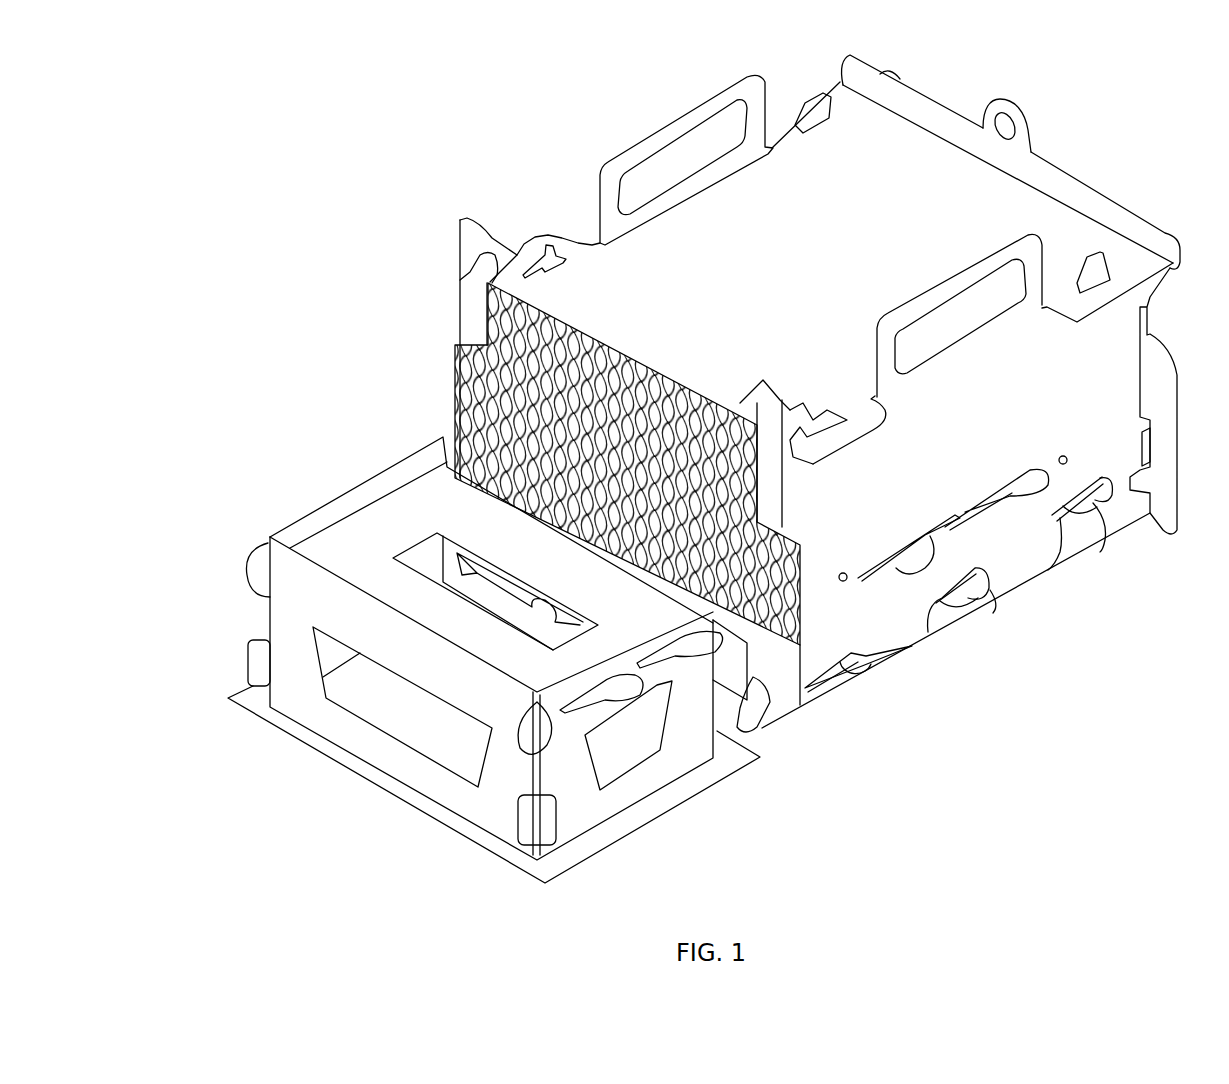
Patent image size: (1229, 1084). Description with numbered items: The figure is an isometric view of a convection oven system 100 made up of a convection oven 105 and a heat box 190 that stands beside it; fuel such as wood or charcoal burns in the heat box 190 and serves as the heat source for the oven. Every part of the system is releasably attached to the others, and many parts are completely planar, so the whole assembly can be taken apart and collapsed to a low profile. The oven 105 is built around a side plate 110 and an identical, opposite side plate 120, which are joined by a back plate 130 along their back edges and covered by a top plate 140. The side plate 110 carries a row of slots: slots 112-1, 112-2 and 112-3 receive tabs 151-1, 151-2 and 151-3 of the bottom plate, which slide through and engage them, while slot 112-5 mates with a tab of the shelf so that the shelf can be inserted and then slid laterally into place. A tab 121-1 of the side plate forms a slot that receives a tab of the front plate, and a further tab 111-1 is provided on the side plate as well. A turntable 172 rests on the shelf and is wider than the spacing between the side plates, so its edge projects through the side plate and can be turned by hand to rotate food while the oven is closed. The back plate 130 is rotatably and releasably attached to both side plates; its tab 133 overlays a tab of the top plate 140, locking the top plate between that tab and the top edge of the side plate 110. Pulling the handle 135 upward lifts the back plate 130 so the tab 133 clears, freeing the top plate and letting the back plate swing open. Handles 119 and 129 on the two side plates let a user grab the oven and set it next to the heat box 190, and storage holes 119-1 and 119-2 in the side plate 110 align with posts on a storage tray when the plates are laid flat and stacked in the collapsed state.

The convection oven system 100 is at (157, 113).
The convection oven 105 is at (465, 118).
The side plate 110 is at (986, 431).
The alignment tab 111-1 is at (1085, 257).
The slot 112-1 is at (908, 648).
The slot 112-2 is at (930, 627).
The slot 112-3 is at (1048, 552).
The slot 112-5 is at (996, 492).
The handle 119 is at (958, 270).
The storage hole 119-1 is at (1061, 455).
The storage hole 119-2 is at (845, 572).
The side plate 120 is at (593, 220).
The tab 121-1 is at (811, 102).
The handle 129 is at (662, 126).
The back plate 130 is at (1107, 200).
The tab 133 is at (1170, 232).
The handle 135 is at (1030, 121).
The top plate 140 is at (820, 262).
The tab 151-1 is at (857, 687).
The tab 151-2 is at (993, 590).
The tab 151-3 is at (1103, 545).
The turntable 172 is at (896, 570).
The heat box 190 is at (198, 424).